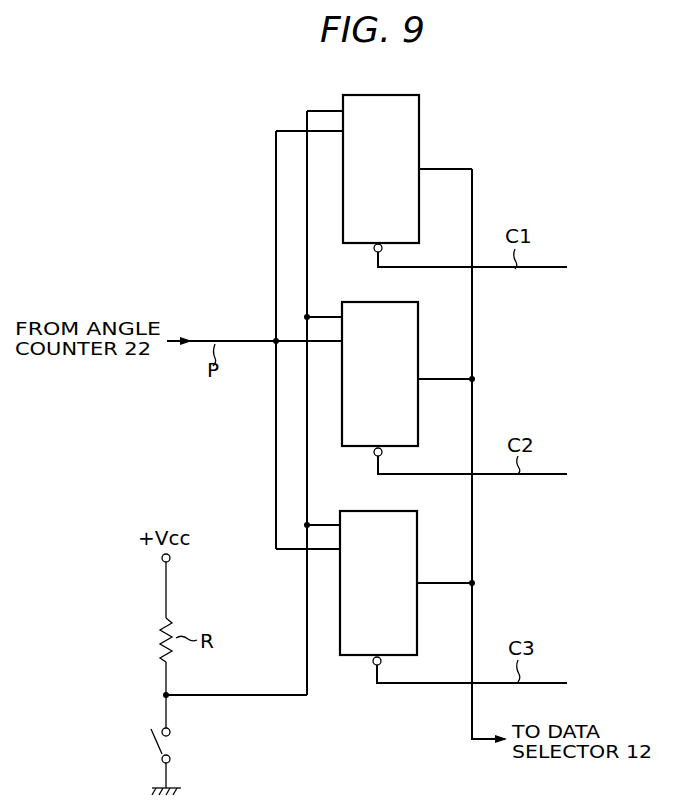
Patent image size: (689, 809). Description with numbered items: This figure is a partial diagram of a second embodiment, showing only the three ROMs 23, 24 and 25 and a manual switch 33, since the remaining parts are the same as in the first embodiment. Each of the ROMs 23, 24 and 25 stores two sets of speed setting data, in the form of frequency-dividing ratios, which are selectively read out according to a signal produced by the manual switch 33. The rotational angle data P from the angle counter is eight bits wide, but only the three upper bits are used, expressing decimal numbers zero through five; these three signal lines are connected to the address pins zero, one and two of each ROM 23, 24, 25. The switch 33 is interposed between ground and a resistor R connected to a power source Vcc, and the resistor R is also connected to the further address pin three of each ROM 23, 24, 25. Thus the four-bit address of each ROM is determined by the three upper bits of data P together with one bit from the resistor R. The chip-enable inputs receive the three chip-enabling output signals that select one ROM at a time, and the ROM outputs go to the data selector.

The ROM 23 is at (384, 95).
The ROM 24 is at (386, 302).
The ROM 25 is at (380, 511).
The manual switch 33 is at (175, 746).